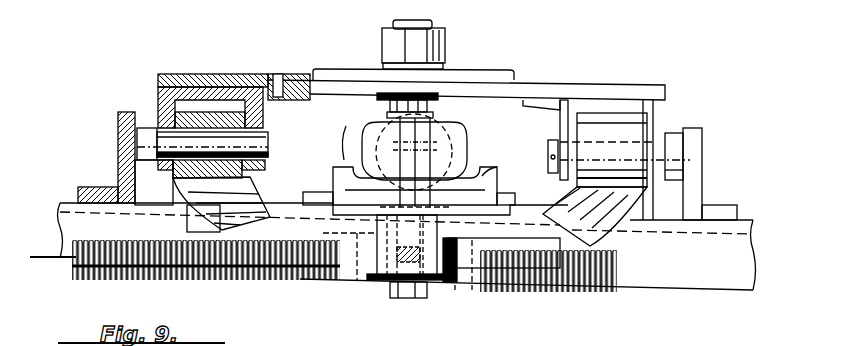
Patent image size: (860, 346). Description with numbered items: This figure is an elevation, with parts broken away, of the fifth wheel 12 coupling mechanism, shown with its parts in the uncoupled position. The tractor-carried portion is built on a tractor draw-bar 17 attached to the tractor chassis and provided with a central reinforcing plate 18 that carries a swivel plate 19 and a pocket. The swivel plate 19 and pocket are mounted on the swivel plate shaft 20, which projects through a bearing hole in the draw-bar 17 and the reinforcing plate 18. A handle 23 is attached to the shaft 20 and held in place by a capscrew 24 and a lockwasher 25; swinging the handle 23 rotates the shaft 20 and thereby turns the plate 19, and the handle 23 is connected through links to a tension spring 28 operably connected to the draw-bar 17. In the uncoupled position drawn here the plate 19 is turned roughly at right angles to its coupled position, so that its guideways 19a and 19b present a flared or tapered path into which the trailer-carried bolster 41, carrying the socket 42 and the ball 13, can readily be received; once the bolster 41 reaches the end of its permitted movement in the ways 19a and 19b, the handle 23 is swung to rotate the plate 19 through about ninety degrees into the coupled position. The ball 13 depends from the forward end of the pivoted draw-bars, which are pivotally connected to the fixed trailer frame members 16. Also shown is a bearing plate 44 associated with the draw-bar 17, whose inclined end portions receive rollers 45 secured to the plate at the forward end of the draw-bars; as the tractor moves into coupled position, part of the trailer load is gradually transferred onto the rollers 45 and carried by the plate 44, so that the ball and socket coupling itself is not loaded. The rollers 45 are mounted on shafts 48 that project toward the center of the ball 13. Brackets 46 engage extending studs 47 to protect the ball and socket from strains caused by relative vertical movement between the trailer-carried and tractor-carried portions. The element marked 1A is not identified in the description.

The frame block 1A is at (250, 74).
The fifth wheel 12 is at (548, 73).
The ball member 13 is at (422, 122).
The fixed trailer frame member 16 is at (465, 76).
The tractor draw-bar 17 is at (62, 205).
The central reinforcing plate 18 is at (472, 283).
The swivel plate 19 is at (326, 180).
The guideway 19a is at (340, 136).
The guideway 19b is at (502, 167).
The swivel plate shaft 20 is at (378, 284).
The handle 23 is at (352, 285).
The capscrew 24 is at (406, 298).
The lockwasher 25 is at (445, 282).
The tension spring 28 is at (86, 282).
The bolster 41 is at (456, 130).
The socket 42 is at (456, 143).
The bearing plate 44 is at (250, 184).
The roller 45 is at (260, 114).
The bracket 46 is at (120, 152).
The extending stud 47 is at (136, 125).
The shaft 48 is at (268, 140).